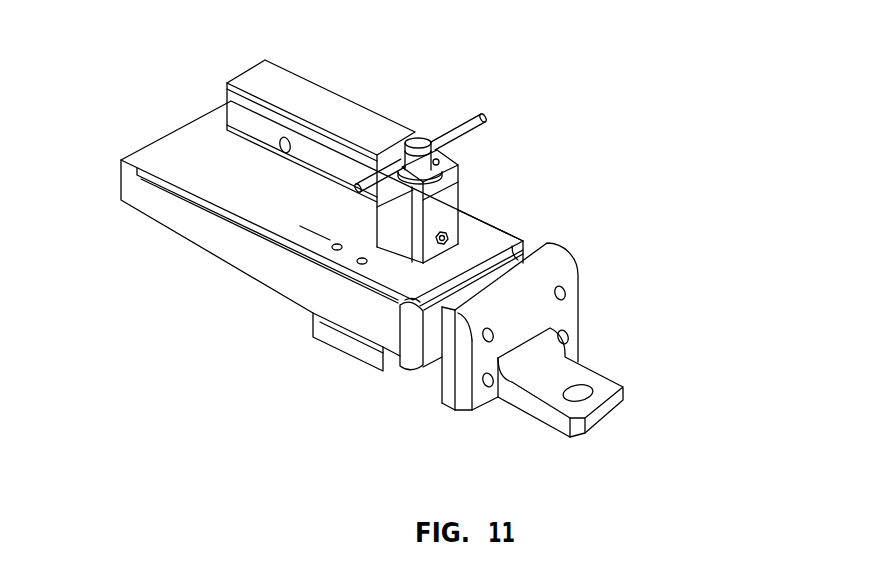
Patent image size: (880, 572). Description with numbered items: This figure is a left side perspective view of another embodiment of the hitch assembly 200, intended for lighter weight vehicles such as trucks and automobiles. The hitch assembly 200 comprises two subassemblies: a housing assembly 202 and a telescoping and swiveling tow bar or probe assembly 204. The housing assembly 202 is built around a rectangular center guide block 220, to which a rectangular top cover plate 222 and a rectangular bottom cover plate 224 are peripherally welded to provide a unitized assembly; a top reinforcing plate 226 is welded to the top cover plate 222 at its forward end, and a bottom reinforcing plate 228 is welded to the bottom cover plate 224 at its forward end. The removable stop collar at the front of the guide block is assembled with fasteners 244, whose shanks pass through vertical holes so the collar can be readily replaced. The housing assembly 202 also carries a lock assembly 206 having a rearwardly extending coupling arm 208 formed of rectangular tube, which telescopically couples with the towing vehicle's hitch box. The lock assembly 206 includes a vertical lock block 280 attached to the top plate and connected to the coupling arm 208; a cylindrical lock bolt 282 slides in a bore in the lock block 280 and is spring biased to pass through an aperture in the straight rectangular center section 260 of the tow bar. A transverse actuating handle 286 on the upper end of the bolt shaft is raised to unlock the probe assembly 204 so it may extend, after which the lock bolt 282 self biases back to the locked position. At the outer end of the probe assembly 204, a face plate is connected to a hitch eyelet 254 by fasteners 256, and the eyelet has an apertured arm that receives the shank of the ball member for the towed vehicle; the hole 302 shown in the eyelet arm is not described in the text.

The hitch assembly 200 is at (642, 82).
The housing assembly 202 is at (146, 223).
The probe assembly 204 is at (590, 274).
The lock assembly 206 is at (466, 182).
The coupling arm 208 is at (316, 87).
The center guide block 220 is at (122, 182).
The top cover plate 222 is at (200, 133).
The bottom cover plate 224 is at (407, 362).
The top reinforcing plate 226 is at (328, 238).
The bottom reinforcing plate 228 is at (343, 335).
The fasteners 244 is at (360, 261).
The hitch eyelet 254 is at (578, 317).
The fasteners 256 is at (565, 293).
The center section 260 is at (420, 140).
The lock block 280 is at (447, 220).
The lock bolt 282 is at (578, 368).
The actuating handle 286 is at (476, 117).
The hole 302 is at (580, 395).